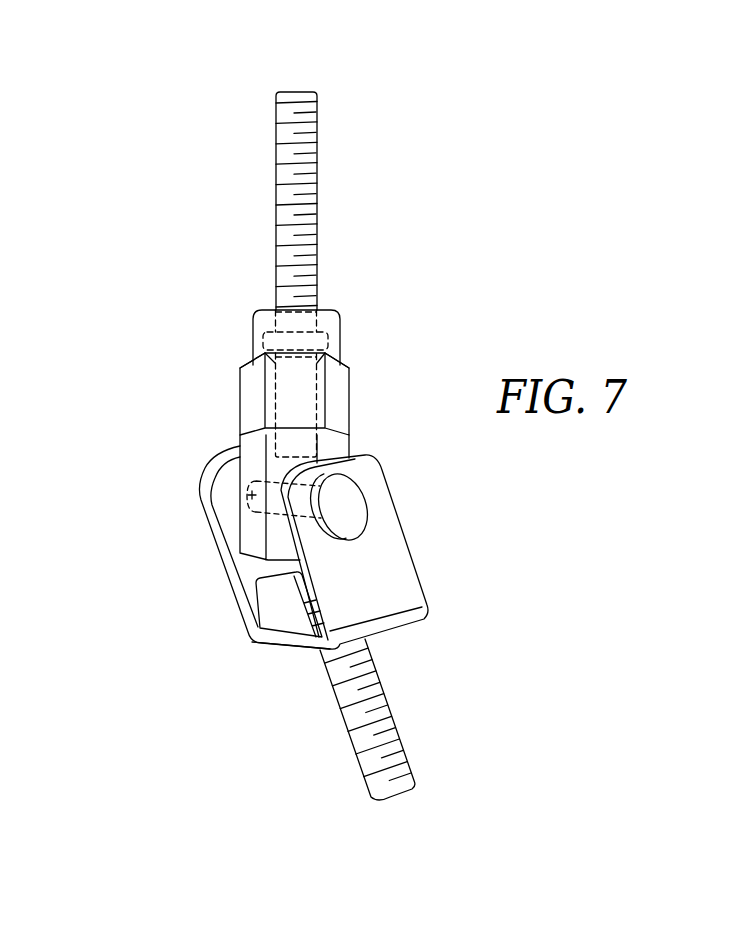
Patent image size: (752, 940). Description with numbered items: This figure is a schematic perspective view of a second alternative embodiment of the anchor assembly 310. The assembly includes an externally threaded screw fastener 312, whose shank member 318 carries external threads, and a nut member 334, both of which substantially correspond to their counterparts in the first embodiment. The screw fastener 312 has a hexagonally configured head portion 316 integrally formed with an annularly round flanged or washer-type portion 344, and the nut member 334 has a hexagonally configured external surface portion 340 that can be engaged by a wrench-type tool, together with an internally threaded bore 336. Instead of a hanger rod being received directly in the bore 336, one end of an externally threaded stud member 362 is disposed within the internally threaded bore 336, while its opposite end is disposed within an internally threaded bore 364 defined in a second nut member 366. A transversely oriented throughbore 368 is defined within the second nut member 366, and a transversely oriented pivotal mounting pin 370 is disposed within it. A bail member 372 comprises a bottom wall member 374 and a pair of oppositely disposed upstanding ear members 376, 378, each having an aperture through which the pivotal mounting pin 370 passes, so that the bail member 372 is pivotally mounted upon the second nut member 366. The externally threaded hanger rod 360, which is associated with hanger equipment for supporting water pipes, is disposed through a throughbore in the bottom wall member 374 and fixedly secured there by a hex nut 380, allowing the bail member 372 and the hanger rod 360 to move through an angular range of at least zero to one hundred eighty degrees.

The anchor assembly 310 is at (548, 204).
The externally threaded screw fastener 312 is at (305, 91).
The shank member 318 is at (307, 193).
The nut member 334 is at (341, 341).
The annularly round flanged or washer-type portion 344 is at (253, 332).
The hexagonally configured head portion 316 is at (240, 369).
The internally threaded bore 336 is at (263, 402).
The hexagonally configured external surface portion 340 is at (350, 388).
The externally threaded stud member 362 is at (303, 404).
The internally threaded bore 364 is at (252, 449).
The transversely oriented throughbore 368 is at (250, 495).
The second nut member 366 is at (257, 535).
The bail member 372 is at (234, 624).
The bottom wall member 374 is at (300, 652).
The upstanding ear member 378 is at (388, 561).
The transversely oriented pivotal mounting pin 370 is at (353, 500).
The upstanding ear member 376 is at (262, 558).
The hex nut 380 is at (320, 606).
The externally threaded hanger rod 360 is at (390, 708).